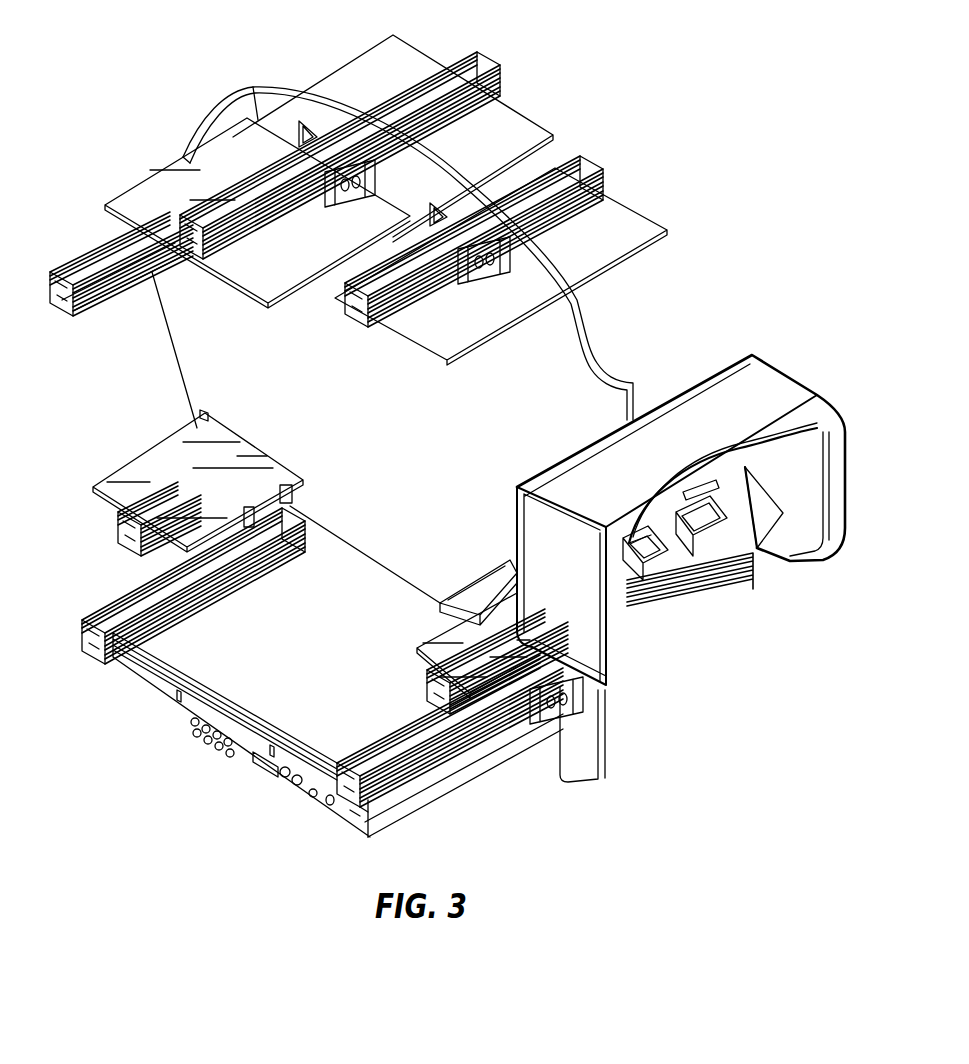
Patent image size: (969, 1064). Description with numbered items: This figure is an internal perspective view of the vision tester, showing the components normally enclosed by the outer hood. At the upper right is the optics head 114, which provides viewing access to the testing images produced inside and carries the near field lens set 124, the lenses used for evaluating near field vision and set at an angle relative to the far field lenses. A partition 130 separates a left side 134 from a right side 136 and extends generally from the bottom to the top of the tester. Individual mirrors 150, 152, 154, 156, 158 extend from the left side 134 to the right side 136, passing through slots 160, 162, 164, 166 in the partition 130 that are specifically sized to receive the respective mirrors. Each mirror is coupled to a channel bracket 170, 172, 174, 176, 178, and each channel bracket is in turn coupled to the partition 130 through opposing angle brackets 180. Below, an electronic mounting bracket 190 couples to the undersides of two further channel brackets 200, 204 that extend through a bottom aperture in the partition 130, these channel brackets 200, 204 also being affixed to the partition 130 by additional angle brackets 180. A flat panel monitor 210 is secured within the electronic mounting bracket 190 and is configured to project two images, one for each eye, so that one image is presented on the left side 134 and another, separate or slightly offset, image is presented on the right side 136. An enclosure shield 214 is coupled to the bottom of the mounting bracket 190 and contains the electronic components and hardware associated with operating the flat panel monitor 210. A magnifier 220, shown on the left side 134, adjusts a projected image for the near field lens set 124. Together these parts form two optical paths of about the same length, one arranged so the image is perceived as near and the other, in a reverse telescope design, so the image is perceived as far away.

The optics head 114 is at (767, 380).
The near field lens set 124 is at (717, 527).
The partition 130 is at (256, 86).
The left side 134 is at (159, 483).
The right side 136 is at (681, 537).
The mirror 150 is at (637, 210).
The mirror 152 is at (527, 110).
The mirror 154 is at (118, 300).
The mirror 156 is at (97, 495).
The mirror 158 is at (430, 642).
The slot 160 is at (523, 258).
The slot 162 is at (262, 118).
The slot 164 is at (175, 268).
The slot 166 is at (205, 417).
The channel bracket 170 is at (603, 160).
The channel bracket 172 is at (493, 58).
The channel bracket 174 is at (97, 248).
The channel bracket 176 is at (125, 547).
The channel bracket 178 is at (450, 683).
The angle brackets 180 is at (306, 122).
The electronic mounting bracket 190 is at (150, 678).
The channel bracket 200 is at (327, 810).
The channel bracket 204 is at (87, 663).
The flat panel monitor 210 is at (233, 675).
The enclosure shield 214 is at (360, 827).
The magnifier 220 is at (453, 600).